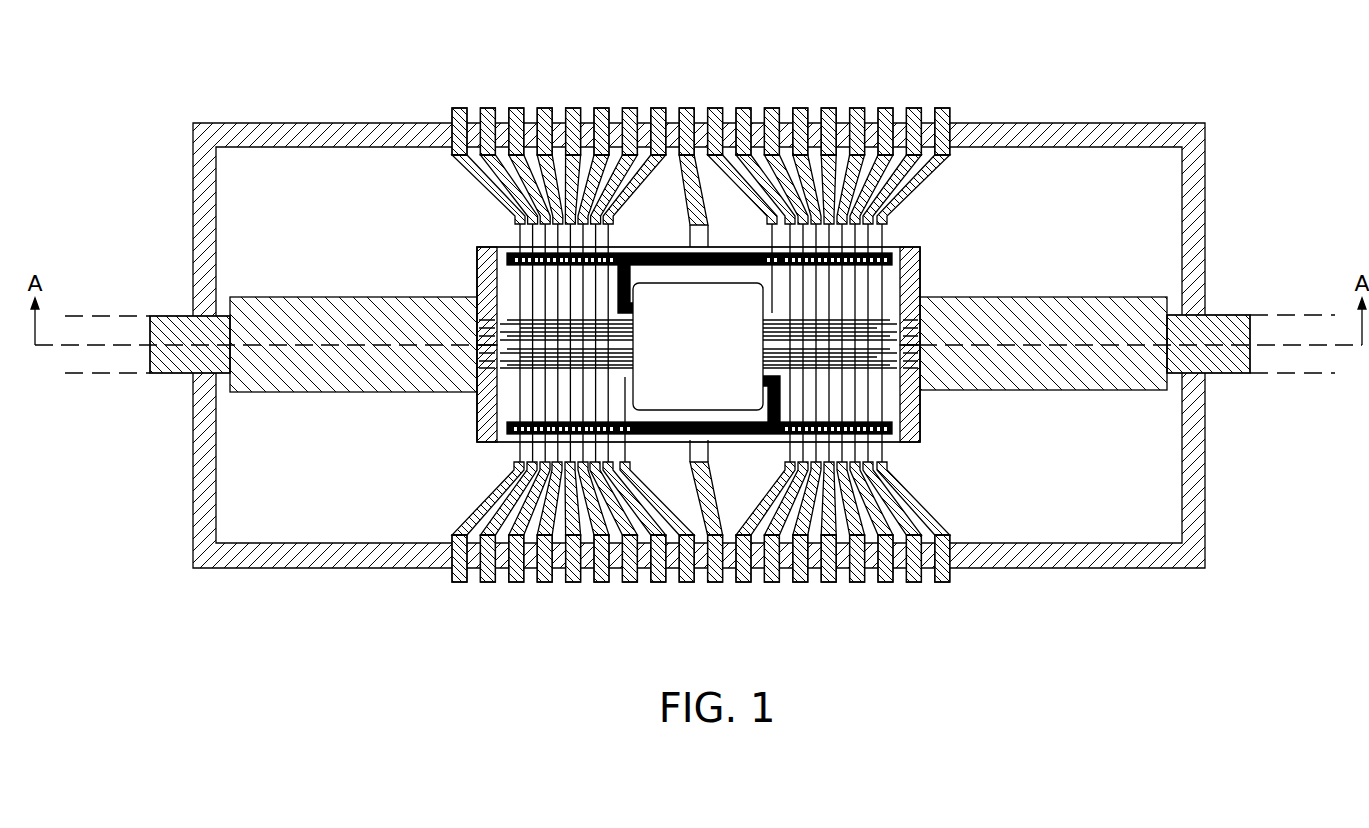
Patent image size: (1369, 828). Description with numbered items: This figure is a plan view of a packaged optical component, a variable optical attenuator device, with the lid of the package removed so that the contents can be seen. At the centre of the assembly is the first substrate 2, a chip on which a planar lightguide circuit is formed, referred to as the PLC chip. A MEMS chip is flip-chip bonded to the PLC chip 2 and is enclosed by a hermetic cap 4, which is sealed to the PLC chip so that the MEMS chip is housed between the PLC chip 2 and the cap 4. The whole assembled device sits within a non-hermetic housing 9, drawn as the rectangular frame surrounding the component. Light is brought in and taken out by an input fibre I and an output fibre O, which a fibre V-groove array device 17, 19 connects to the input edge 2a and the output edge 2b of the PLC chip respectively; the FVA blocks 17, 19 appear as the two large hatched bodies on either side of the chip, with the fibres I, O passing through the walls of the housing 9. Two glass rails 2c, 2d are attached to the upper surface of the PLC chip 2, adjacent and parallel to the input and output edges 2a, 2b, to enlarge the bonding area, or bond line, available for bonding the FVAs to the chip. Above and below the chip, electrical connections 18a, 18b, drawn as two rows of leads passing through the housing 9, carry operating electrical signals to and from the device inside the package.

The first substrate 2 is at (701, 337).
The input edge 2a is at (468, 421).
The output edge 2b is at (930, 417).
The glass rail 2c is at (490, 272).
The glass rail 2d is at (920, 268).
The hermetic cap 4 is at (692, 354).
The housing 9 is at (1138, 556).
The fibre V-groove array device 17 is at (305, 307).
The fibre V-groove array device 19 is at (1095, 310).
The electrical connections 18a is at (453, 84).
The electrical connections 18b is at (453, 605).
The input fibre I is at (171, 330).
The output fibre O is at (1228, 325).